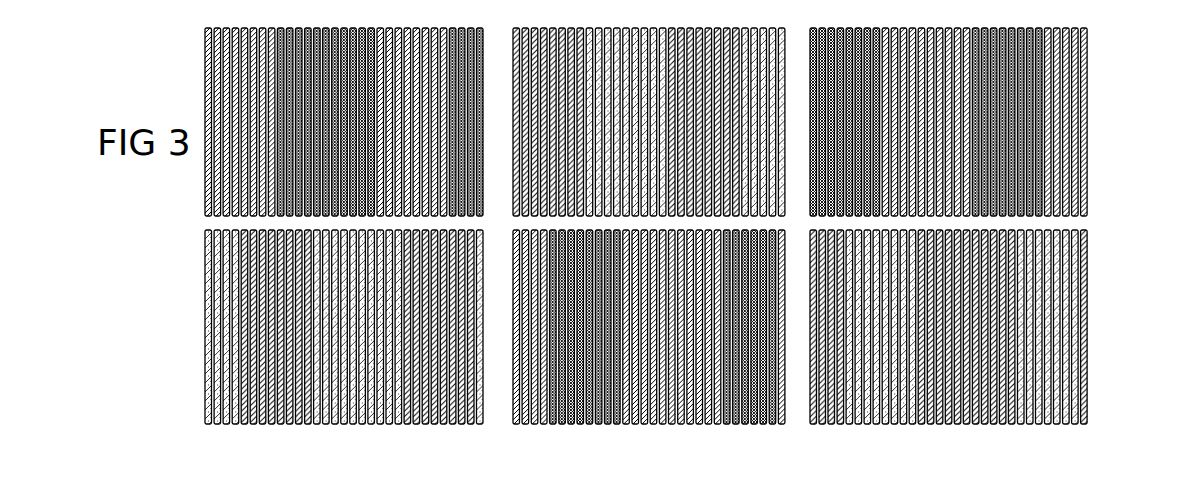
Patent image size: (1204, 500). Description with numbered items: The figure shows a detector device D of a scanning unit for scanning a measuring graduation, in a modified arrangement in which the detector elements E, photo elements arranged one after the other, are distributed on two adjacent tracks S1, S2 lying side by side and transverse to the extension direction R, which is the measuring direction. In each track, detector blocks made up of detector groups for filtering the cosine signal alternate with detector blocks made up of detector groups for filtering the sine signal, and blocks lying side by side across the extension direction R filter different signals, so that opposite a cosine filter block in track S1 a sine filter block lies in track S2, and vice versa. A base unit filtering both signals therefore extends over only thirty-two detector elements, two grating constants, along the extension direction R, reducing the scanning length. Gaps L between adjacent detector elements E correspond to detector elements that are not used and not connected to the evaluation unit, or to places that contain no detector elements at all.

The track S1 is at (1086, 95).
The track S2 is at (1086, 343).
The detector device D is at (1091, 153).
The extension direction R is at (1148, 205).
The detector elements E is at (1085, 215).
The gaps L is at (493, 40).